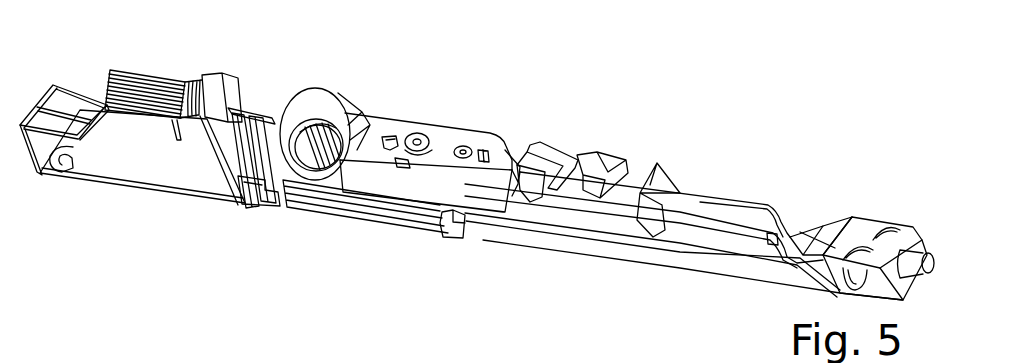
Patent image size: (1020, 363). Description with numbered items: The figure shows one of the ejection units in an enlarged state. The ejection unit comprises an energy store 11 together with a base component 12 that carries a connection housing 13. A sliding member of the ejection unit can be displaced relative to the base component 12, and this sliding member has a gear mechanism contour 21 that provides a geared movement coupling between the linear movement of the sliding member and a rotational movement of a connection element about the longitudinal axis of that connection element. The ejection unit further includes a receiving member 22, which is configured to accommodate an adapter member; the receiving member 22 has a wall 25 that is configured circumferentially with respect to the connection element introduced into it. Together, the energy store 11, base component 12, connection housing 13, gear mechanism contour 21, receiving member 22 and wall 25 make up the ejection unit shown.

The energy store 11 is at (166, 193).
The base component 12 is at (618, 265).
The connection housing 13 is at (387, 123).
The gear mechanism contour 21 is at (307, 160).
The receiving member 22 is at (291, 158).
The wall 25 is at (323, 103).